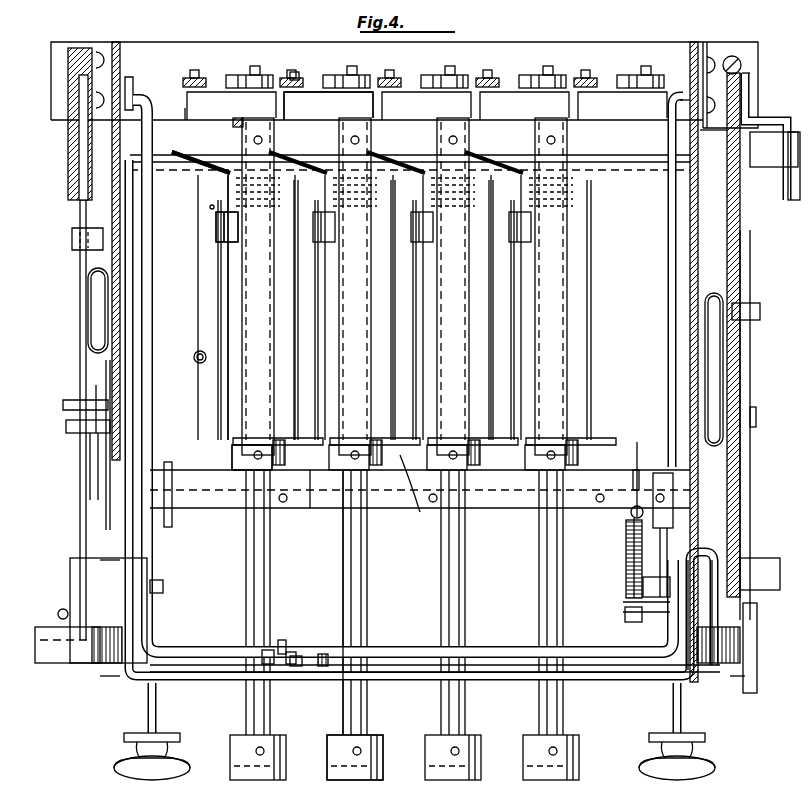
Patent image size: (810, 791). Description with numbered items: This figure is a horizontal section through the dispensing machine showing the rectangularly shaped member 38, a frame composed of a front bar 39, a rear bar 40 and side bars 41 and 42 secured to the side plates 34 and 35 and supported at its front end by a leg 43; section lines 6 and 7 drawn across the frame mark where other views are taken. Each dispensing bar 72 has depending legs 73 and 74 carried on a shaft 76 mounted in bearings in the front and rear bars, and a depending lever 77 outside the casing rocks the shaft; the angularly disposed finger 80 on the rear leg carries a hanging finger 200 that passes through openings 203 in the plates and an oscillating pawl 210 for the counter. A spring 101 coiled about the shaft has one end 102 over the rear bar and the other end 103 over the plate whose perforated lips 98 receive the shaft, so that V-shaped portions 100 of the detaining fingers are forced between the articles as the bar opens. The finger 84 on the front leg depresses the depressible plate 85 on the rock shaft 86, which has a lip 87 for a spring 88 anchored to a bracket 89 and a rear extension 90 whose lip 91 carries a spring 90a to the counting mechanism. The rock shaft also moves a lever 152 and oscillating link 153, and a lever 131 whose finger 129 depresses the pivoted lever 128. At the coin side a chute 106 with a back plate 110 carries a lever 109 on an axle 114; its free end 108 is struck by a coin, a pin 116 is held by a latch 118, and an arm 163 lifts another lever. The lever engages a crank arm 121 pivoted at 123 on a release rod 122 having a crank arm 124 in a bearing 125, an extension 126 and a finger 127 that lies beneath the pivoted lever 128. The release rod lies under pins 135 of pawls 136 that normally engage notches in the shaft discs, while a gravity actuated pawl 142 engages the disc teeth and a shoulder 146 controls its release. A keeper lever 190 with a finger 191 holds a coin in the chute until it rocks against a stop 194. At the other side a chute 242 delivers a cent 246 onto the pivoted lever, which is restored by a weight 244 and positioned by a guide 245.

The stud 6 is at (210, 470).
The pivot 7 is at (417, 681).
The side plate 34 is at (112, 145).
The side plate 35 is at (690, 245).
The rectangularly shaped member 38 is at (140, 690).
The front bar 39 is at (200, 678).
The rear bar 40 is at (215, 160).
The side bar 41 is at (133, 232).
The side bar 42 is at (687, 378).
The leg 43 is at (52, 663).
The dispensing bar 72 is at (258, 306).
The front leg 73 is at (232, 445).
The depending leg 74 is at (240, 110).
The shaft 76 is at (343, 698).
The depending lever 77 is at (340, 750).
The finger 80 is at (328, 106).
The finger 84 is at (505, 452).
The depressible plate 85 is at (312, 490).
The shaft 86 is at (195, 498).
The lip 87 is at (660, 440).
The spring 88 is at (626, 548).
The bracket 89 is at (625, 622).
The rear extension 90 is at (214, 380).
The spring 90a is at (197, 350).
The lip 91 is at (195, 360).
The perforated lip 98 is at (228, 435).
The V-shaped portion 100 is at (222, 390).
The spring 101 is at (235, 190).
The spring end 102 is at (172, 152).
The spring end 103 is at (212, 212).
The chute 106 is at (735, 100).
The free end 108 is at (745, 125).
The lever 109 is at (740, 450).
The back plate 110 is at (727, 185).
The axle 114 is at (747, 625).
The pin 116 is at (760, 303).
The latch 118 is at (761, 425).
The crank arm 121 is at (720, 570).
The release rod 122 is at (412, 660).
The pivot 123 is at (735, 540).
The crank arm 124 is at (140, 610).
The bearing 125 is at (100, 560).
The extension 126 is at (66, 425).
The finger 127 is at (63, 400).
The pivoted lever 128 is at (90, 445).
The finger 129 is at (72, 400).
The lever 131 is at (98, 468).
The pin 135 is at (305, 650).
The pawl 136 is at (300, 640).
The gravity actuated pawl 142 is at (195, 662).
The shoulder 146 is at (306, 660).
The lever 152 is at (660, 555).
The oscillating link 153 is at (643, 602).
The arm 163 is at (756, 418).
The lever 190 is at (792, 200).
The finger 191 is at (758, 167).
The stop 194 is at (745, 130).
The depending finger 200 is at (330, 75).
The opening 203 is at (345, 66).
The oscillating pawl 210 is at (270, 78).
The chute 242 is at (88, 315).
The weight 244 is at (75, 640).
The guide 245 is at (72, 236).
The cent 246 is at (70, 168).